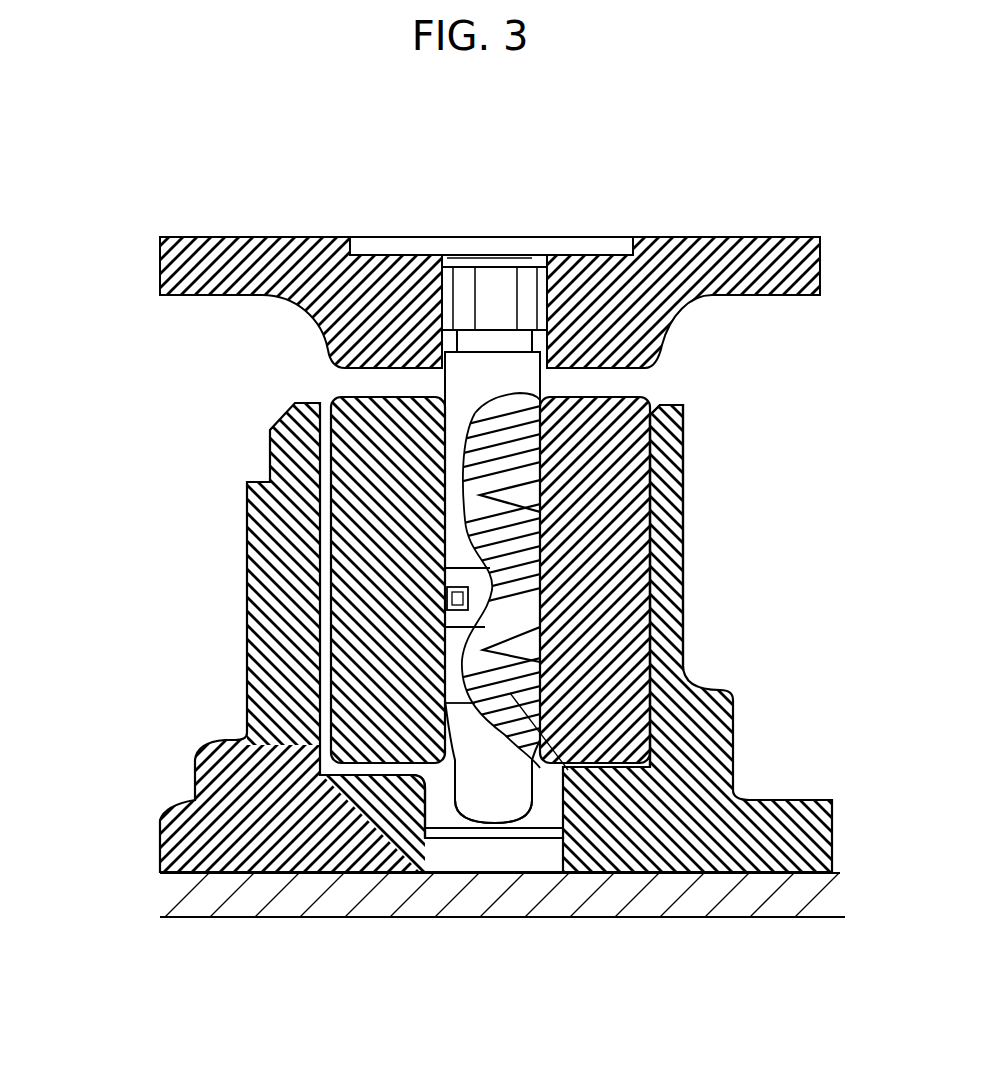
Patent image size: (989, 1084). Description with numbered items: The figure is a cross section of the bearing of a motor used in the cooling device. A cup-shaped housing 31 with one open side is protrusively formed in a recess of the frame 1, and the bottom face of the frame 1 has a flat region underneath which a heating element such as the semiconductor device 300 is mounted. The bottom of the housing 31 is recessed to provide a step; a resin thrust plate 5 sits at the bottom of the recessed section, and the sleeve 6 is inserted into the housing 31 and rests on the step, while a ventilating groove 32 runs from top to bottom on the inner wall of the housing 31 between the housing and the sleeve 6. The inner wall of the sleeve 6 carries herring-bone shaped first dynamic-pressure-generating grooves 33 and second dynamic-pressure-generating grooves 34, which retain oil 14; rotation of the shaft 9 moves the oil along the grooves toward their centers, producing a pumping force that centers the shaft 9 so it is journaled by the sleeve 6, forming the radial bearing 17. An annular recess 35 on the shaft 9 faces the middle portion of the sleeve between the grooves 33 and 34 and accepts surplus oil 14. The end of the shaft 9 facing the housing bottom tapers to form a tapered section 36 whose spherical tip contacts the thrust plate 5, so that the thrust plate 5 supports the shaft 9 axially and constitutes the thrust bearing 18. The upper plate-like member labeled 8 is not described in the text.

The frame 1 is at (210, 840).
The thrust plate 5 is at (542, 833).
The sleeve 6 is at (323, 755).
The upper mounting plate 8 is at (267, 263).
The shaft 9 is at (422, 777).
The oil 14 is at (383, 757).
The radial bearing 17 is at (677, 517).
The thrust bearing 18 is at (495, 830).
The housing 31 is at (683, 458).
The ventilating groove 32 is at (325, 627).
The first dynamic-pressure-generating grooves 33 is at (507, 430).
The second dynamic-pressure-generating grooves 34 is at (635, 842).
The annular recess 35 is at (462, 578).
The tapered section 36 is at (465, 697).
The semiconductor device 300 is at (803, 893).